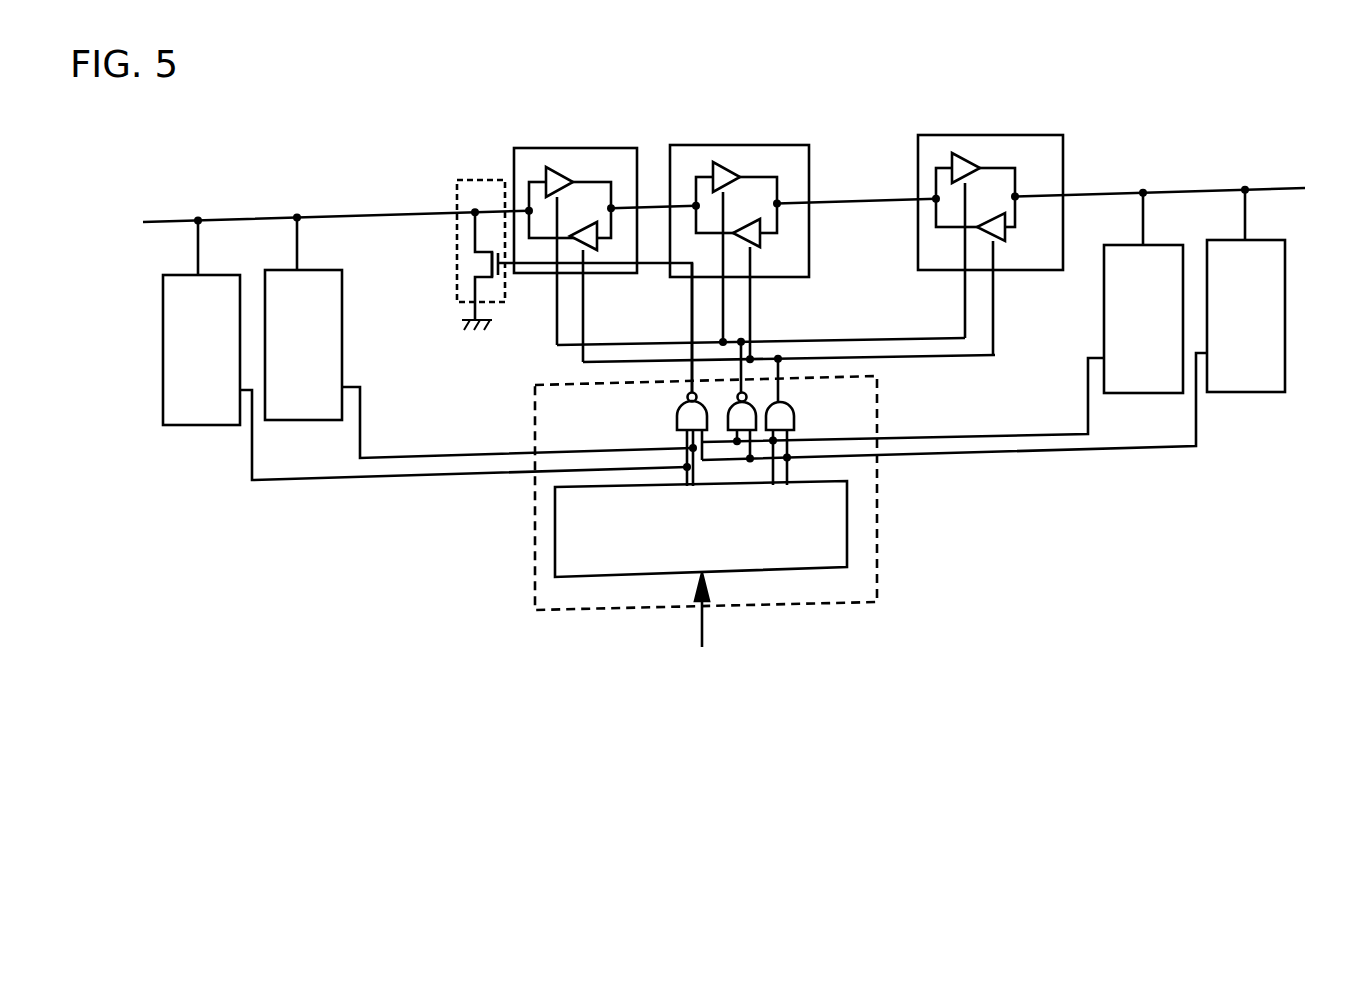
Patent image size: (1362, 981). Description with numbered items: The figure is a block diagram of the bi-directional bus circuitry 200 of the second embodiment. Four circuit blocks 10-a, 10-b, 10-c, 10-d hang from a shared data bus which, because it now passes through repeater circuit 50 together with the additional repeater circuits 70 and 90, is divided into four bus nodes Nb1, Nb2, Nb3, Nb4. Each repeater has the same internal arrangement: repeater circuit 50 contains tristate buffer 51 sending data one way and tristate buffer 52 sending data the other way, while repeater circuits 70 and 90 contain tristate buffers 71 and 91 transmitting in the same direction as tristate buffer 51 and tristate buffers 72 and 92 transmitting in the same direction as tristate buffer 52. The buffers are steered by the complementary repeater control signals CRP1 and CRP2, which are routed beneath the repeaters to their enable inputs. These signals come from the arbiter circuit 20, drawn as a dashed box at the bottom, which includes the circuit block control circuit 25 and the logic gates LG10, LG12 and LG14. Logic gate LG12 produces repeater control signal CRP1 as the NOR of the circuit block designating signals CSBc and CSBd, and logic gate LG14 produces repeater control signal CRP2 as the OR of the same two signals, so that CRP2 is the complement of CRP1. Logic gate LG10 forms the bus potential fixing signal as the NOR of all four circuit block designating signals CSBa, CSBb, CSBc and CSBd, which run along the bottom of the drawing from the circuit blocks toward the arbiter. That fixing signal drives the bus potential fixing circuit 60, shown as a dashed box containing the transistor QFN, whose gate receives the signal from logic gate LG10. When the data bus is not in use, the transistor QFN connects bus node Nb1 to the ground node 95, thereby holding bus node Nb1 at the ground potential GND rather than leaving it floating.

The bi-directional bus circuitry 200 is at (1260, 72).
The circuit block 10-a is at (205, 427).
The circuit block 10-b is at (307, 422).
The circuit block 10-c is at (1145, 395).
The circuit block 10-d is at (1248, 394).
The arbiter circuit 20 is at (877, 583).
The circuit block control circuit 25 is at (847, 528).
The repeater circuit 50 is at (558, 148).
The tristate buffer 51 is at (566, 169).
The tristate buffer 52 is at (597, 247).
The bus potential fixing circuit 60 is at (482, 180).
The repeater circuit 70 is at (752, 145).
The tristate buffer 71 is at (735, 163).
The tristate buffer 72 is at (758, 240).
The repeater circuit 90 is at (975, 135).
The tristate buffer 91 is at (975, 154).
The tristate buffer 92 is at (1003, 232).
The ground node 95 is at (473, 294).
The transistor QFN is at (473, 266).
The ground potential GND is at (446, 322).
The logic gate LG10 is at (682, 420).
The logic gate LG12 is at (757, 409).
The logic gate LG14 is at (795, 411).
The bus node Nb1 is at (240, 213).
The bus node Nb2 is at (1180, 190).
The bus node Nb3 is at (651, 205).
The bus node Nb4 is at (858, 199).
The repeater control signal CRP1 is at (761, 328).
The repeater control signal CRP2 is at (789, 369).
The circuit block designating signal CSBa is at (465, 449).
The circuit block designating signal CSBb is at (519, 423).
The circuit block designating signal CSBc is at (903, 401).
The circuit block designating signal CSBd is at (954, 416).